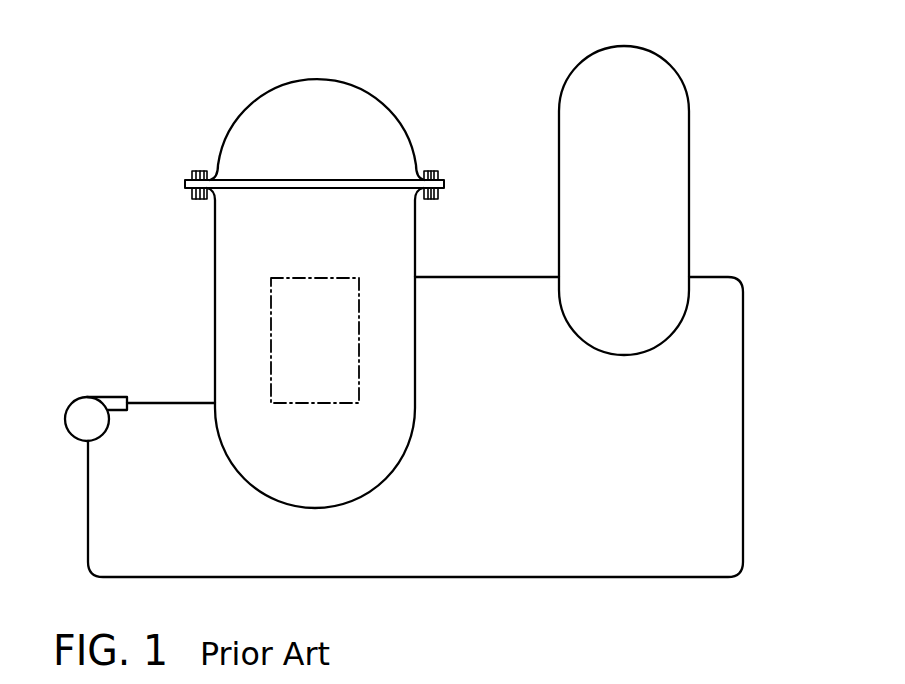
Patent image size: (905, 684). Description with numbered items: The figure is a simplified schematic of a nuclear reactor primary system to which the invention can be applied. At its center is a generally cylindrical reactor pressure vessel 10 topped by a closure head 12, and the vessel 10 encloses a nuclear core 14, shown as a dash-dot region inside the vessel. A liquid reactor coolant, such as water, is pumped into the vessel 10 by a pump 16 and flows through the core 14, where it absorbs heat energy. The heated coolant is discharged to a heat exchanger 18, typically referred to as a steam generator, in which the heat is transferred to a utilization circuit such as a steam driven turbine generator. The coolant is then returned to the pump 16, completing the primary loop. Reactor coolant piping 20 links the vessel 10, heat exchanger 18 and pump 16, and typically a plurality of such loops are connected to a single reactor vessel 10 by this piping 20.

The reactor pressure vessel 10 is at (329, 351).
The closure head 12 is at (227, 130).
The nuclear core 14 is at (271, 328).
The pump 16 is at (82, 398).
The heat exchanger 18 is at (689, 142).
The reactor coolant piping 20 is at (743, 512).